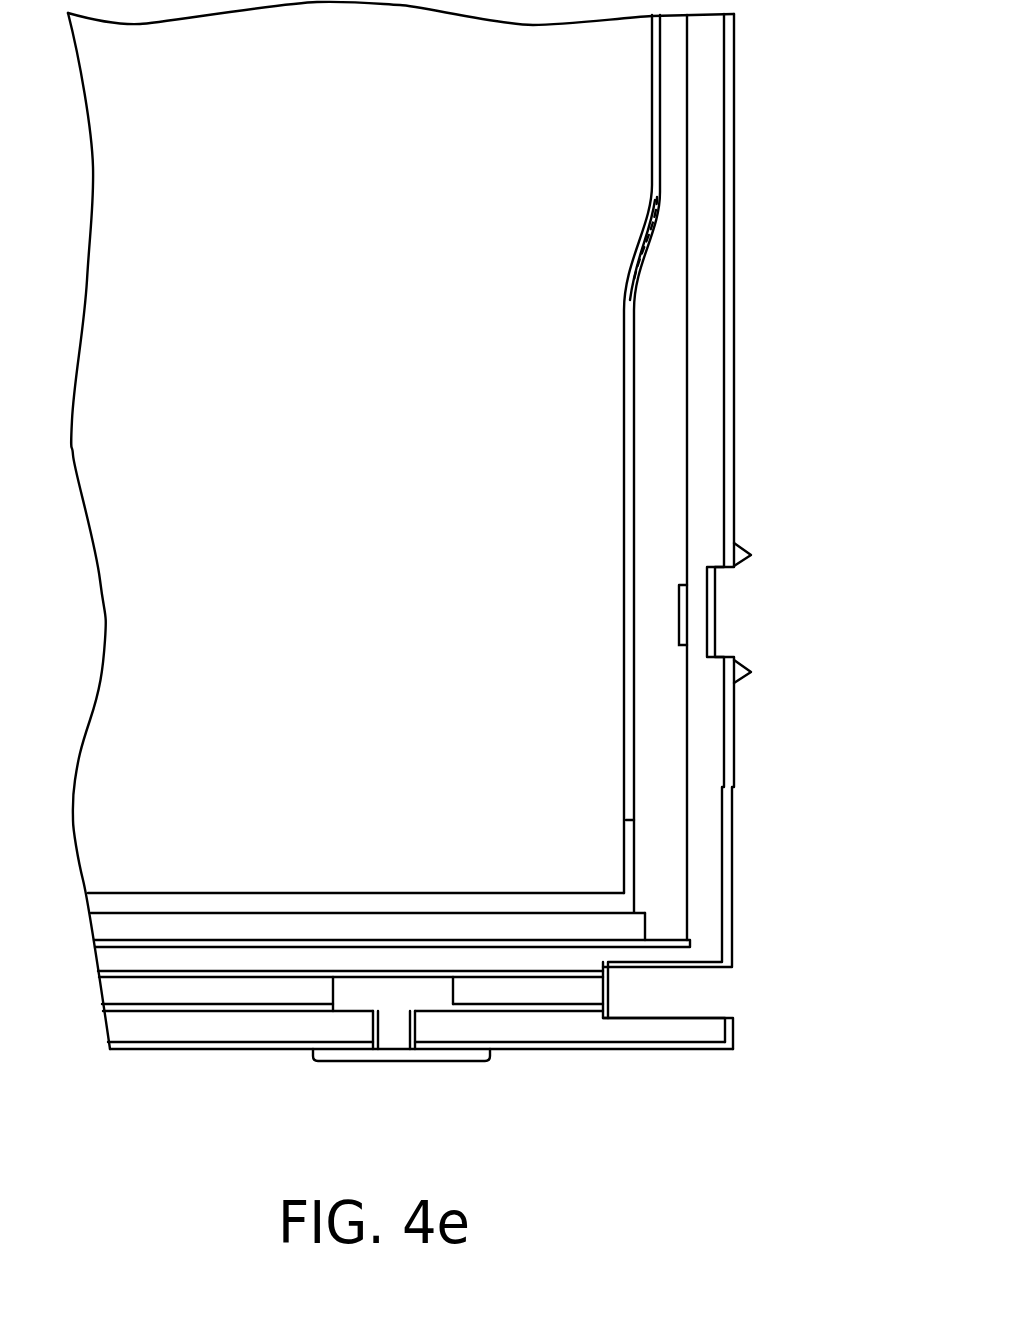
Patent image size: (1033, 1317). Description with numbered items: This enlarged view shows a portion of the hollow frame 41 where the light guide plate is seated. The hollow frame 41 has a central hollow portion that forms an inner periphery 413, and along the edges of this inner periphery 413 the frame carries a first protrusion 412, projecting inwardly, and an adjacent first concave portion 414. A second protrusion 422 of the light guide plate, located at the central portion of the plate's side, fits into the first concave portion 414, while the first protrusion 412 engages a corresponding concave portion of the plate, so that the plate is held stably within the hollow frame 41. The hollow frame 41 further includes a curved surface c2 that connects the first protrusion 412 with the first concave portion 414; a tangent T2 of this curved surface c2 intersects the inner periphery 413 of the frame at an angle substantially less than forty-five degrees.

The hollow frame 41 is at (667, 838).
The first protrusion 412 is at (663, 433).
The inner periphery 413 is at (660, 133).
The first concave portion 414 is at (660, 82).
The second protrusion 422 is at (652, 185).
The curved surface c2 is at (643, 265).
The tangent T2 is at (657, 200).